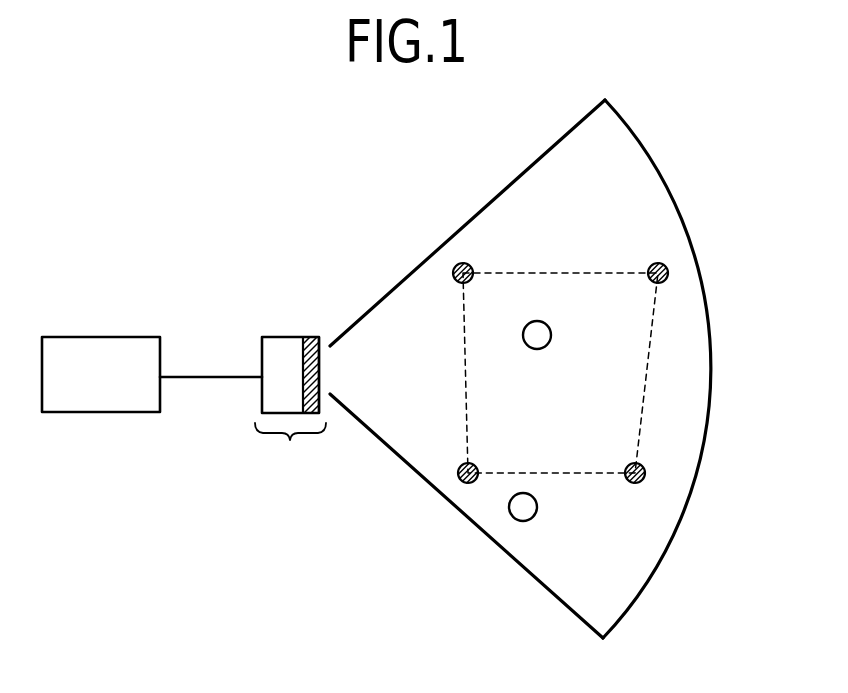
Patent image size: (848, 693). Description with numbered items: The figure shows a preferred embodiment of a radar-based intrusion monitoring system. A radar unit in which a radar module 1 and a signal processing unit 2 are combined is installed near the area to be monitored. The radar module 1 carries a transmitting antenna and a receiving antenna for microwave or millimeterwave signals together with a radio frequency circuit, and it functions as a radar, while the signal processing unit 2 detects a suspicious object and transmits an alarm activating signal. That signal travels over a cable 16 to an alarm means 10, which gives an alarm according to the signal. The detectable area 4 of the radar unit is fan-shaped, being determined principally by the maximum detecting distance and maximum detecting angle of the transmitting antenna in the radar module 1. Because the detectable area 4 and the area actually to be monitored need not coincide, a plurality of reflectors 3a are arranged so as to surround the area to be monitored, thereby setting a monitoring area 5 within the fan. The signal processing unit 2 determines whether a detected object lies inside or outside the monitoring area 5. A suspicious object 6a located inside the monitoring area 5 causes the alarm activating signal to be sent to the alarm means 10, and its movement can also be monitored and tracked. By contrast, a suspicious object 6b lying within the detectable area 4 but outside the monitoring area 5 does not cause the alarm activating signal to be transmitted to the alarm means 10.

The radar module 1 is at (311, 337).
The signal processing unit 2 is at (268, 356).
The reflectors 3a is at (454, 265).
The detectable area 4 is at (648, 190).
The monitoring area 5 is at (653, 330).
The suspicious object 6a is at (552, 342).
The suspicious object 6b is at (517, 513).
The alarm means 10 is at (101, 374).
The cable 16 is at (193, 378).